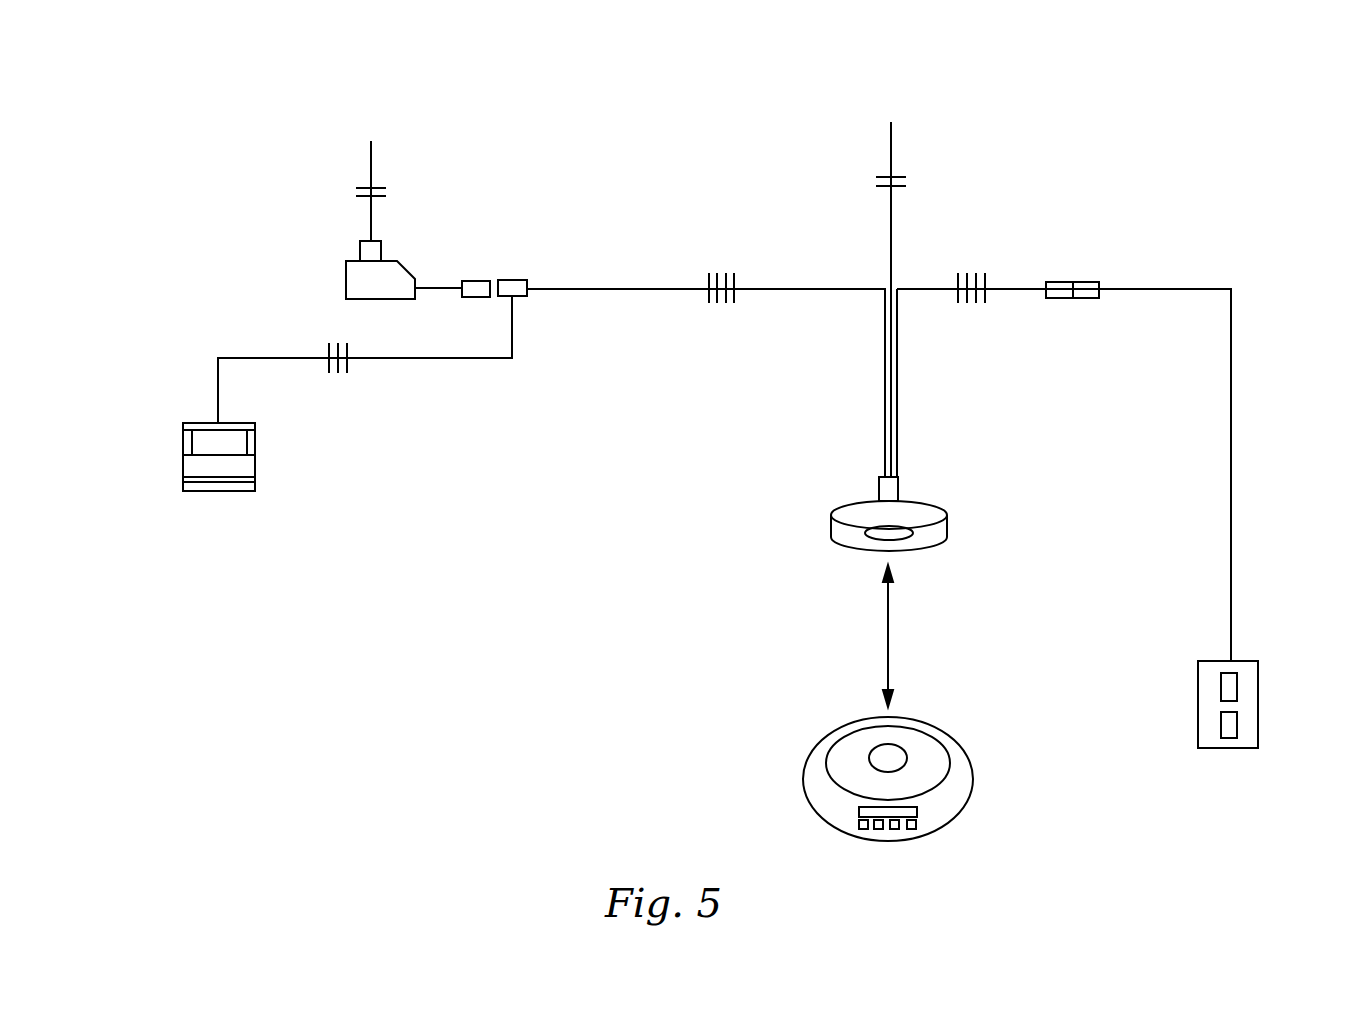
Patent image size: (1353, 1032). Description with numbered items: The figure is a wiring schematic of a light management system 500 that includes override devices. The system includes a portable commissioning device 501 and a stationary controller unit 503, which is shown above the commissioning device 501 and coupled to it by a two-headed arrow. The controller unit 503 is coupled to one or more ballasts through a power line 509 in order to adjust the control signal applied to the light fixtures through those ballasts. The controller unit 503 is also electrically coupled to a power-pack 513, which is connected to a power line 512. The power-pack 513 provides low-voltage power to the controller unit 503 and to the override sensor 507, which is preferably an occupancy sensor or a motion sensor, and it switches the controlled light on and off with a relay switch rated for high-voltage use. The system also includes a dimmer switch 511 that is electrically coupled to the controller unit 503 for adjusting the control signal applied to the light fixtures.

The light management system 500 is at (243, 98).
The portable commissioning device 501 is at (812, 812).
The stationary controller unit 503 is at (930, 511).
The override sensor 507 is at (266, 460).
The power line 509 is at (891, 222).
The dimmer switch 511 is at (1258, 702).
The power line 512 is at (371, 163).
The power-pack 513 is at (405, 267).